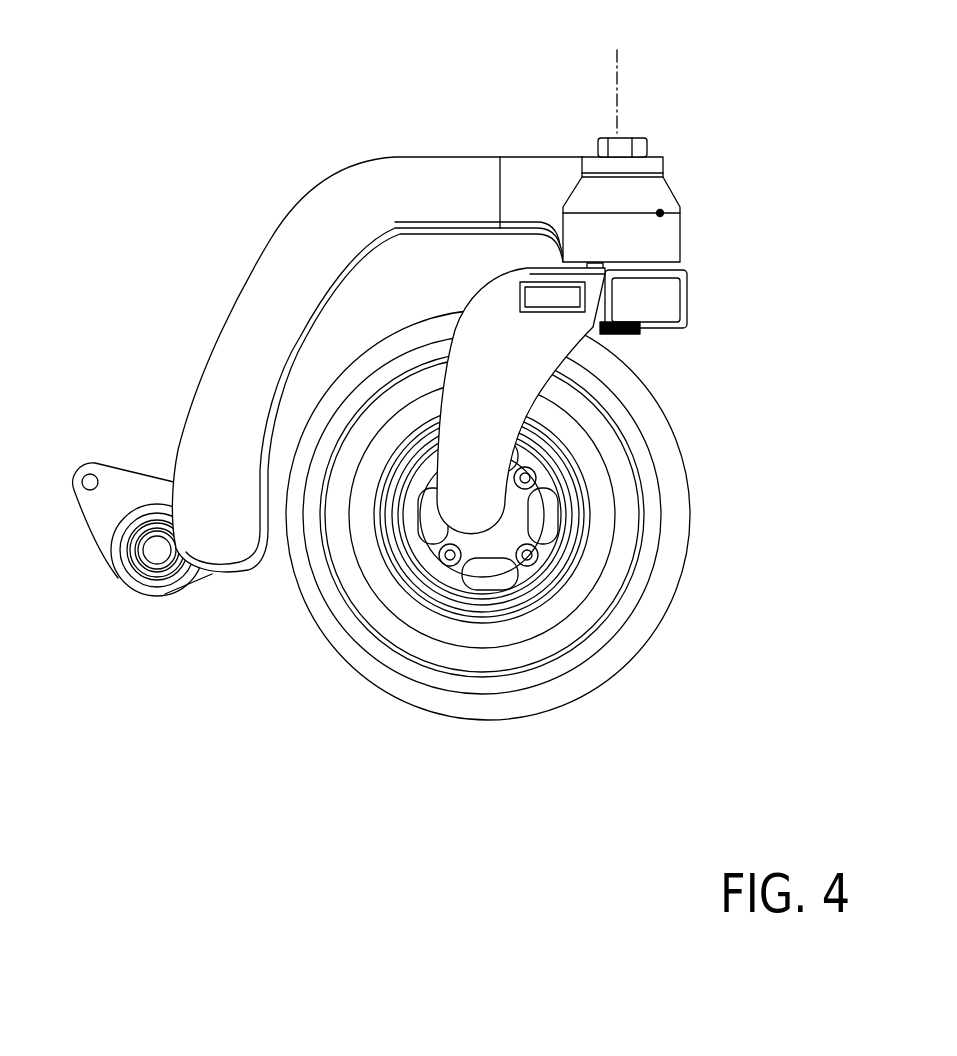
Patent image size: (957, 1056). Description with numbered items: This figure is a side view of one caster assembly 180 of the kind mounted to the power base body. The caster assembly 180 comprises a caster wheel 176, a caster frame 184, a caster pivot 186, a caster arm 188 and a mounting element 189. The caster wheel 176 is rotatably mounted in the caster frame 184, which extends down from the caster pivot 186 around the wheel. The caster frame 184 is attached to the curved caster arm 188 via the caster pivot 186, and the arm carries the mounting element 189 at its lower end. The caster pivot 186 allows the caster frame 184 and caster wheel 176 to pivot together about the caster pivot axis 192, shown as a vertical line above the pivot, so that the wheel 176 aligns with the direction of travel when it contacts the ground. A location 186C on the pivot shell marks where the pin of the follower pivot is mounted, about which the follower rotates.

The caster wheel 176 is at (680, 508).
The caster assembly 180 is at (292, 118).
The caster frame 184 is at (497, 317).
The caster pivot 186 is at (668, 240).
The follower pivot mounting location 186C is at (660, 213).
The caster arm 188 is at (238, 365).
The mounting element 189 is at (160, 570).
The caster pivot axis 192 is at (617, 80).